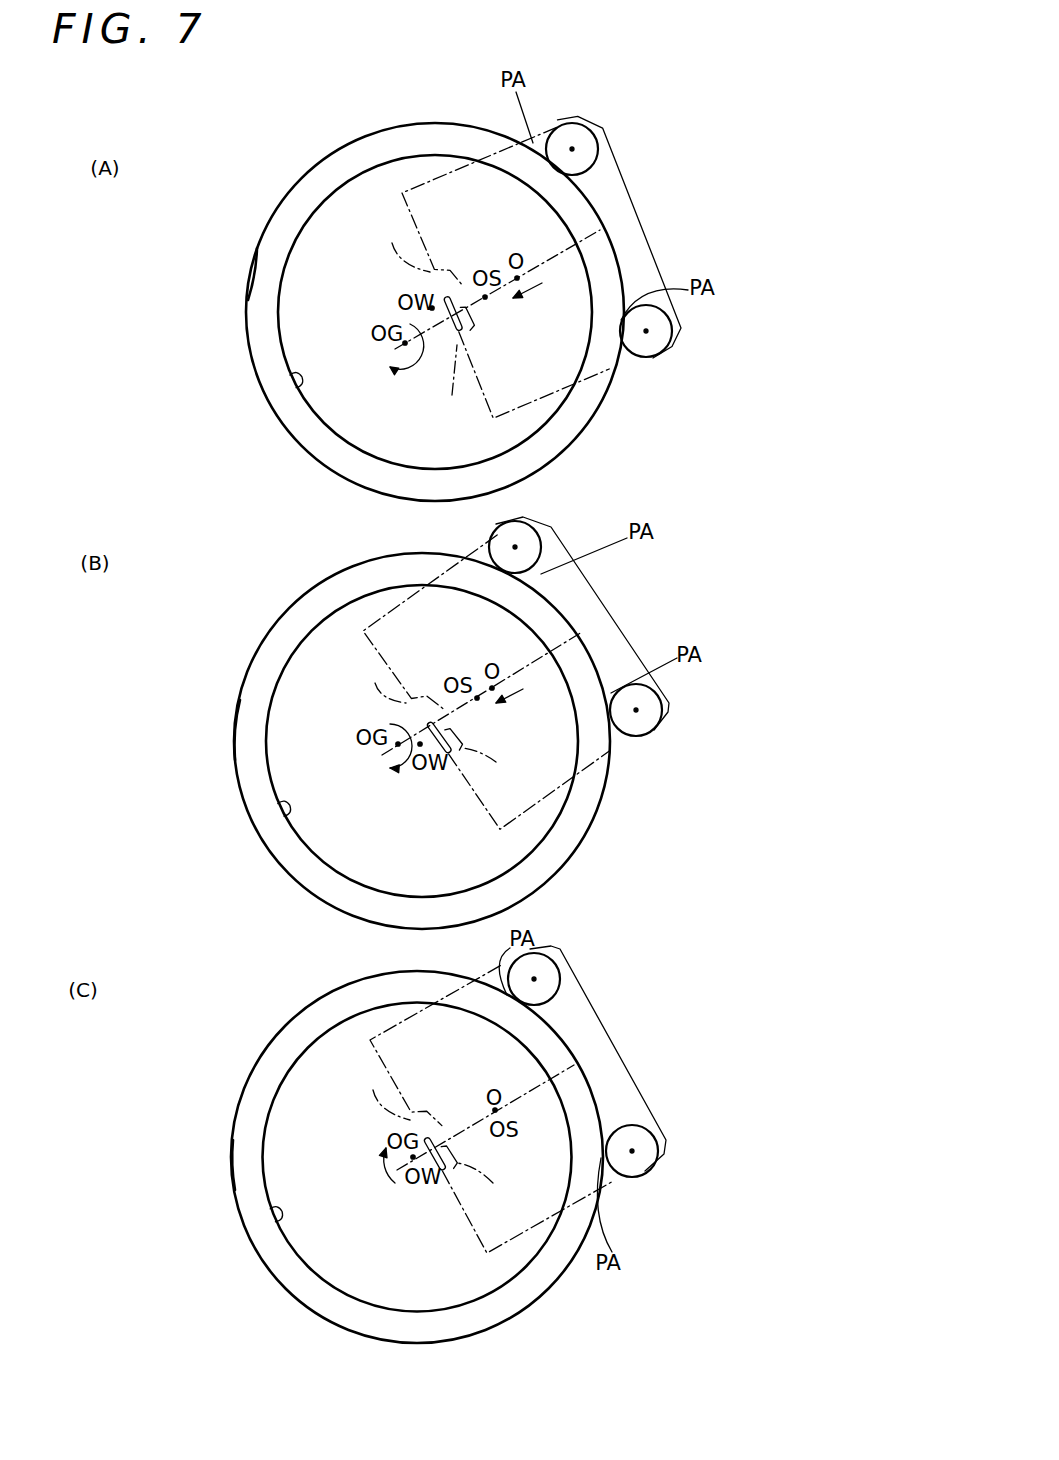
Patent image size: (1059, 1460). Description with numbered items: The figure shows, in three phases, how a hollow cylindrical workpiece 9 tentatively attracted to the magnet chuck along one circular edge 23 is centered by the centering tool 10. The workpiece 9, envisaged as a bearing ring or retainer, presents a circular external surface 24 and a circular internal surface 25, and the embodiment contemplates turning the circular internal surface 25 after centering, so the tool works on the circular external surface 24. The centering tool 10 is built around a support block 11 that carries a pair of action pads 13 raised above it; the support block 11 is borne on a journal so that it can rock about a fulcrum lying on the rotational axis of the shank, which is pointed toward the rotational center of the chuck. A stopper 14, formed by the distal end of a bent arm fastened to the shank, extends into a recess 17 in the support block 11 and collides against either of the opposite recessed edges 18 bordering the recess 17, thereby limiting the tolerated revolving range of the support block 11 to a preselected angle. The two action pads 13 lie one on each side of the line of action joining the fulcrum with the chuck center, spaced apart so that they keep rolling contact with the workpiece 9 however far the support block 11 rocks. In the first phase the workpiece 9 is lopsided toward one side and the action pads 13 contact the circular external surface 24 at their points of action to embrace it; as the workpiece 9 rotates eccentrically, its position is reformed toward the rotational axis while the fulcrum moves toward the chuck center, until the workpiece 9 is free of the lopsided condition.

The workpiece 9 is at (301, 181).
The centering tool 10 is at (614, 677).
The support block 11 is at (637, 238).
The action pads 13 is at (641, 213).
The stopper 14 is at (447, 338).
The recess 17 is at (450, 282).
The recessed edges 18 is at (435, 706).
The circular edge 23 is at (259, 303).
The circular external surface 24 is at (264, 214).
The circular internal surface 25 is at (292, 386).